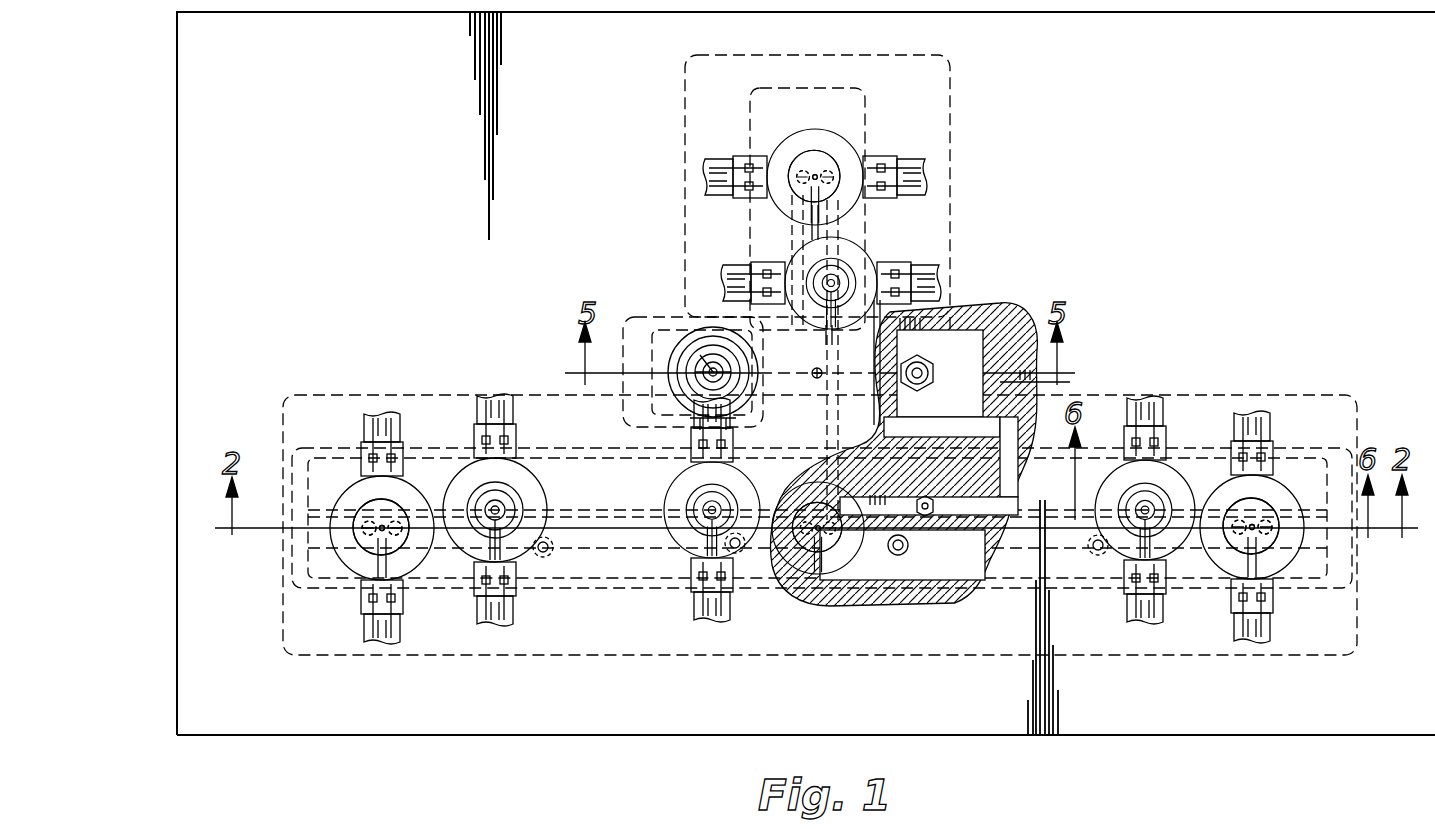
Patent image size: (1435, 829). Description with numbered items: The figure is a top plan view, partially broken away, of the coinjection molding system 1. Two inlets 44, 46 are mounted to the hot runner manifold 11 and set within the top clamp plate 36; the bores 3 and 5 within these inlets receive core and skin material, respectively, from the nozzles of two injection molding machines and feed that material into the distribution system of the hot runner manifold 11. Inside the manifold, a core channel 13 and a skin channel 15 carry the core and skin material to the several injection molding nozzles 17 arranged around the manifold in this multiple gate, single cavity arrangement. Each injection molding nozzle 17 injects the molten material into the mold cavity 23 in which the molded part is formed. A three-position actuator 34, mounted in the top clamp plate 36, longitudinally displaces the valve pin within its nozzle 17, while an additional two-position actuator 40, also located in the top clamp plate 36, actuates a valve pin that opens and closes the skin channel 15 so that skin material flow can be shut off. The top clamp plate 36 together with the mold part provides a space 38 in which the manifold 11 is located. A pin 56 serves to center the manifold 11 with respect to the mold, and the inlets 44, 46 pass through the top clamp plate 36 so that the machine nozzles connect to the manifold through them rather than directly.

The coinjection molding system 1 is at (1094, 196).
The bore 3 is at (674, 344).
The bore 5 is at (1008, 328).
The hot runner manifold 11 is at (968, 340).
The distribution channel 13 is at (790, 252).
The distribution channel 15 is at (836, 244).
The injection molding nozzle 17 is at (836, 152).
The mold cavity 23 is at (1220, 658).
The three-position actuator 34 is at (782, 155).
The top clamp plate 36 is at (1245, 191).
The space 38 is at (927, 437).
The two-position actuator 40 is at (858, 255).
The inlet 44 is at (705, 365).
The inlet 46 is at (930, 378).
The pin 56 is at (812, 370).